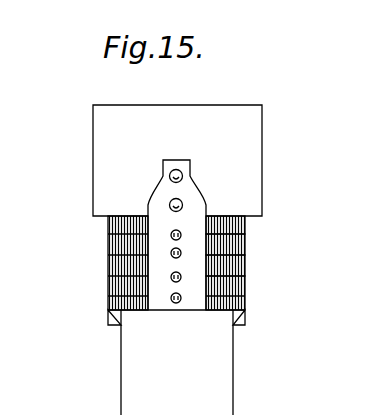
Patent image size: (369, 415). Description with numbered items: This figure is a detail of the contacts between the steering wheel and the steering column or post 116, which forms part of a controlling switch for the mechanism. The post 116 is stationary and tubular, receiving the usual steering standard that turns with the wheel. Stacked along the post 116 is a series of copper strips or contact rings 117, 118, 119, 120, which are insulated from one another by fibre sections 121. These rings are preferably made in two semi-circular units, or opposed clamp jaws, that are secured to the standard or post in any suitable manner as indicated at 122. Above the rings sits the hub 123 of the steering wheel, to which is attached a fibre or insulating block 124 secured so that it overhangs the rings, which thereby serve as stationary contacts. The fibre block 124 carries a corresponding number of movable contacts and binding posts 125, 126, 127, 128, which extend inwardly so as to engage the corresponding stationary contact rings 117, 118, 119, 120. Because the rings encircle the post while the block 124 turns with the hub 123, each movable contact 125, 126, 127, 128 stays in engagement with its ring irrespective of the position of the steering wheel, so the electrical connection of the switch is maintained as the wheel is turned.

The steering column or post 116 is at (157, 362).
The contact ring 117 is at (245, 237).
The contact ring 118 is at (245, 258).
The contact ring 119 is at (245, 280).
The contact ring 120 is at (245, 302).
The fibre sections 121 is at (108, 227).
The clamp jaw securing means 122 is at (106, 322).
The hub 123 is at (250, 130).
The fibre or insulating block 124 is at (203, 193).
The movable contact and binding post 125 is at (171, 231).
The movable contact and binding post 126 is at (165, 252).
The movable contact and binding post 127 is at (181, 280).
The movable contact and binding post 128 is at (175, 303).